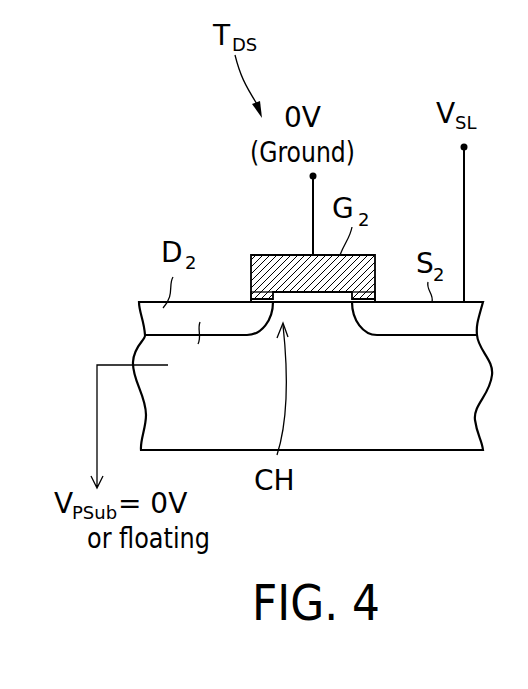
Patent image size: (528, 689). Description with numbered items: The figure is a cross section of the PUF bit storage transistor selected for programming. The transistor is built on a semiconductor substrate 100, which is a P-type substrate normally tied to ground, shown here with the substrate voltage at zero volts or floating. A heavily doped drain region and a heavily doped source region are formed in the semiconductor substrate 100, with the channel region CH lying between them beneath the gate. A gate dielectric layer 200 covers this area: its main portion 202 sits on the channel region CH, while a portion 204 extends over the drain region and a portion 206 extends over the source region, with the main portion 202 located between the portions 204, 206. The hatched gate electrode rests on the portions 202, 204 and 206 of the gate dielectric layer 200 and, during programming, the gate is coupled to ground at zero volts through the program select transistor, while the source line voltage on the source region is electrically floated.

The semiconductor substrate 100 is at (337, 441).
The gate dielectric layer 200 is at (376, 298).
The main portion of the gate dielectric layer 202 is at (313, 300).
The portion of the gate dielectric layer on the drain region 204 is at (267, 322).
The portion of the gate dielectric layer on the source region 206 is at (367, 305).